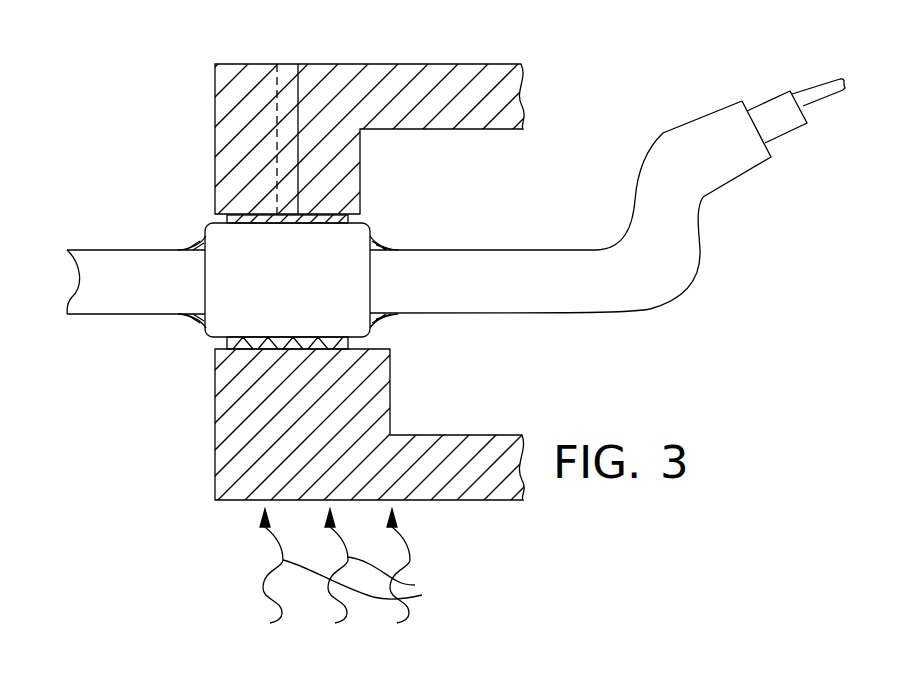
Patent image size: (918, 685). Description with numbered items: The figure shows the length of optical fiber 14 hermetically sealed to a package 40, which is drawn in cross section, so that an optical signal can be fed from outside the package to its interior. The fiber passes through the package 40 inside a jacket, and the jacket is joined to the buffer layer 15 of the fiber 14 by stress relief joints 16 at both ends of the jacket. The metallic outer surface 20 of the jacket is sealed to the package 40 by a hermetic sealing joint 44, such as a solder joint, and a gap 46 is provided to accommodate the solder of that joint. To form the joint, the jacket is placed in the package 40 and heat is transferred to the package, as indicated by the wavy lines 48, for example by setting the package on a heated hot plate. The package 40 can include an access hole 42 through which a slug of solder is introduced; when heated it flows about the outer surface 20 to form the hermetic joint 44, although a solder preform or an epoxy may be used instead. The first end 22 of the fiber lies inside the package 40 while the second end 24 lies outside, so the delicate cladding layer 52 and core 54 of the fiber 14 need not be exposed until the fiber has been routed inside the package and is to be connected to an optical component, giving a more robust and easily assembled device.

The optical fiber 14 is at (98, 249).
The buffer layer 15 is at (518, 265).
The stress relief joints 16 is at (195, 247).
The outer surface 20 is at (275, 285).
The first end 22 is at (72, 297).
The second end 24 is at (747, 103).
The package 40 is at (372, 75).
The access hole 42 is at (288, 70).
The hermetic sealing joint 44 is at (348, 343).
The gap 46 is at (208, 343).
The wavy lines 48 is at (410, 556).
The cladding layer 52 is at (783, 123).
The core 54 is at (828, 93).